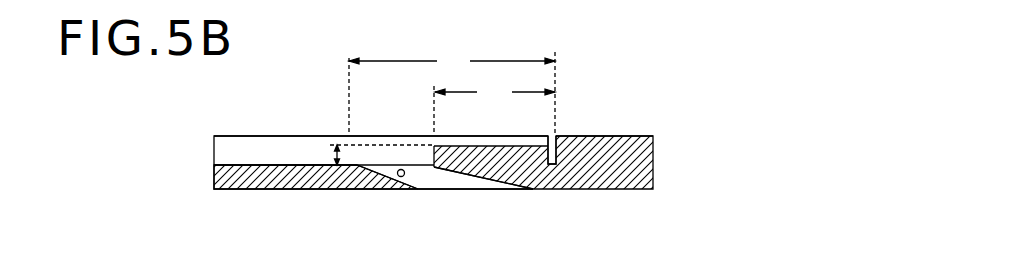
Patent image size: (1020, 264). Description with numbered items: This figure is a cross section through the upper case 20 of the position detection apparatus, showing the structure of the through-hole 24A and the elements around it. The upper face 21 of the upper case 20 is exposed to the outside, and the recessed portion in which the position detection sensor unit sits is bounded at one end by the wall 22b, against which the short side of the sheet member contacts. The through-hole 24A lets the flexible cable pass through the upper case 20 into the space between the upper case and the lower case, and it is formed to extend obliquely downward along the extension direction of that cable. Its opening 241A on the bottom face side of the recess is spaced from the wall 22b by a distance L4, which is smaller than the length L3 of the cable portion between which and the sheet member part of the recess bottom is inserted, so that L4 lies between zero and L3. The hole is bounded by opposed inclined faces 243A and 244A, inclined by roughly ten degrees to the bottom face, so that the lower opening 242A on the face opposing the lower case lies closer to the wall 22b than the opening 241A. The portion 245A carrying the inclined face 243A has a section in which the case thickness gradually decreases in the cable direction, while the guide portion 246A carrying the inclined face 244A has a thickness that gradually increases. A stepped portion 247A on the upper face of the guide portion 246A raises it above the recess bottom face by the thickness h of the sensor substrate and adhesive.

The upper case 20 is at (643, 158).
The upper face 21 is at (222, 135).
The wall 22b is at (555, 134).
The through-hole 24A is at (425, 178).
The opening 241A is at (420, 177).
The opening 242A is at (490, 186).
The inclined face 243A is at (396, 183).
The inclined face 244A is at (508, 183).
The portion having the inclined face 245A is at (358, 180).
The guide portion 246A is at (502, 153).
The stepped portion 247A is at (458, 152).
The thickness h is at (336, 152).
The length L3 is at (452, 91).
The distance L4 is at (494, 106).